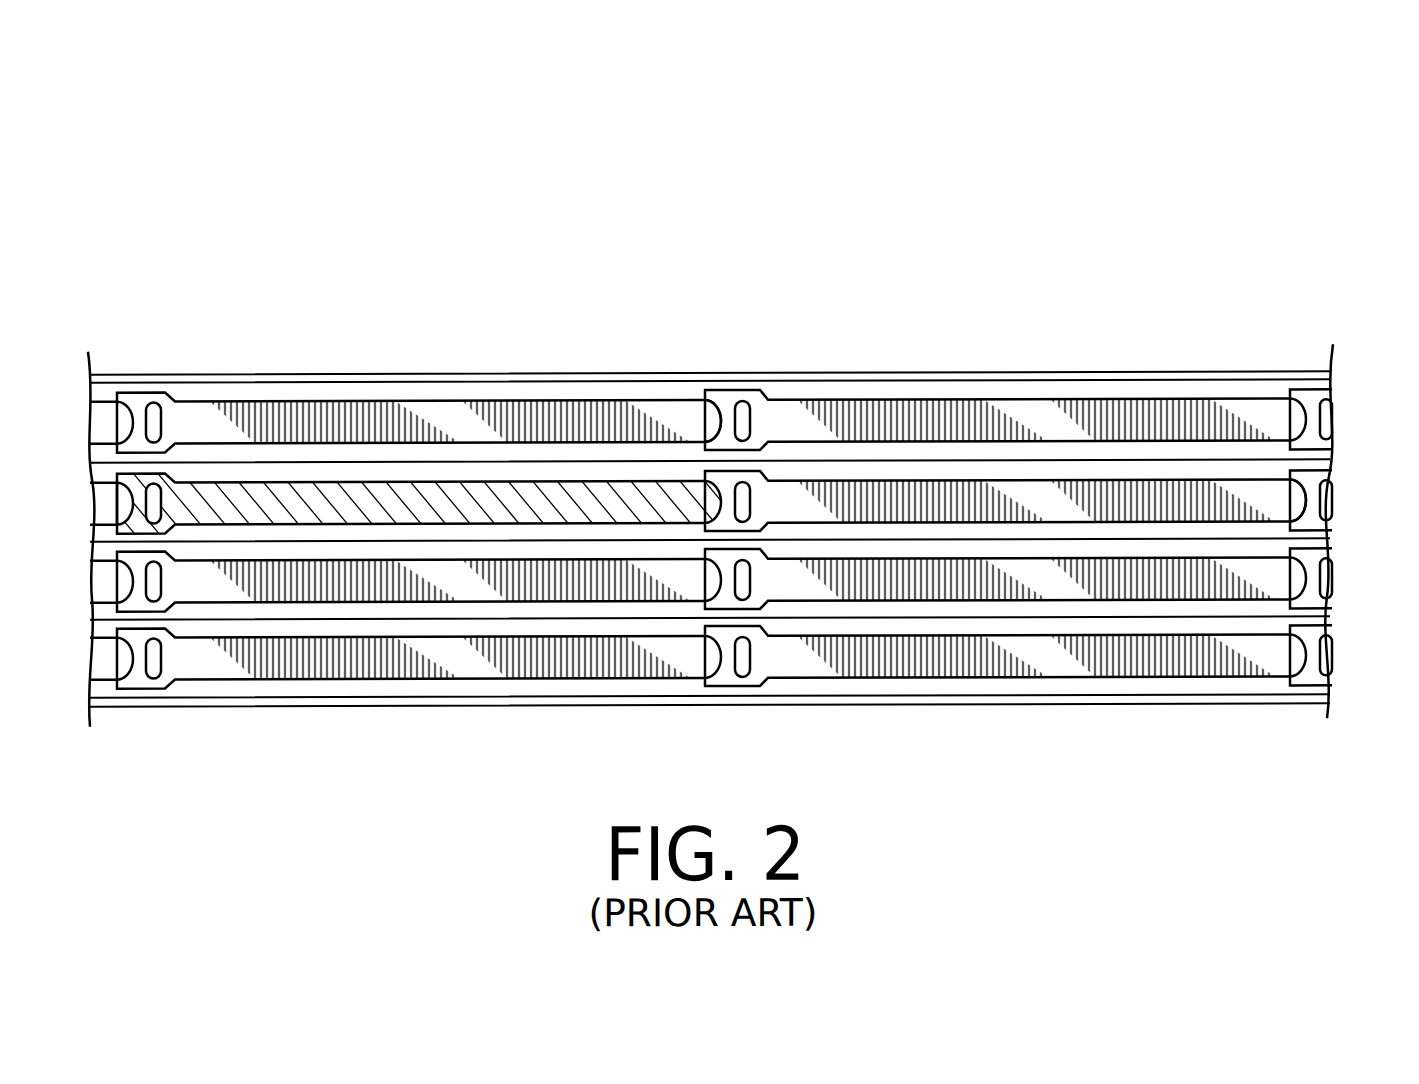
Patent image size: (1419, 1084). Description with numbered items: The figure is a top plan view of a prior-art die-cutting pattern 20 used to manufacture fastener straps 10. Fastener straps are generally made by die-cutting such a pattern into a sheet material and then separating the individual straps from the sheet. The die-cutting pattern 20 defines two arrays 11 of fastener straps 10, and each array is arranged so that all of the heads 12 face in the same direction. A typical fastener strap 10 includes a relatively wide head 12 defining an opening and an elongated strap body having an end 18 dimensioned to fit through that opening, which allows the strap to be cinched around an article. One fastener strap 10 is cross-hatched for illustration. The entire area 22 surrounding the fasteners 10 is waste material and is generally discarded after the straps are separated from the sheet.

The fastener strap 10 is at (1030, 495).
The array of fastener straps 11 is at (438, 280).
The head 12 is at (135, 403).
The end 18 is at (710, 421).
The die-cutting pattern 20 is at (1148, 187).
The area surrounding the fasteners 22 is at (1235, 395).